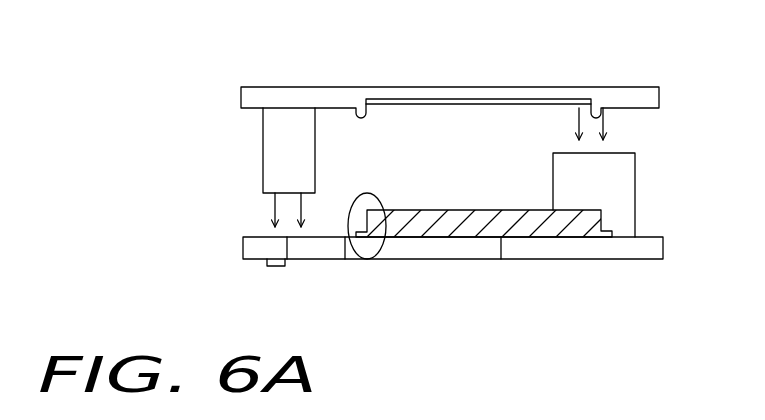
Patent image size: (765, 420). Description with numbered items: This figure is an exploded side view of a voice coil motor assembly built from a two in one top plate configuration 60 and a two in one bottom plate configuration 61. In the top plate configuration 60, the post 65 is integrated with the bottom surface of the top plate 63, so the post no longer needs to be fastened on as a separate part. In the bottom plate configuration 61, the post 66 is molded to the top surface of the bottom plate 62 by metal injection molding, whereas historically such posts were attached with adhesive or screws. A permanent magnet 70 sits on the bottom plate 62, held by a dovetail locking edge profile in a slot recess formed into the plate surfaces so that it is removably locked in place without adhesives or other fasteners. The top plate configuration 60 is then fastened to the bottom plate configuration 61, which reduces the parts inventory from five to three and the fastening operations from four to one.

The two in one top plate configuration 60 is at (212, 62).
The two in one bottom plate configuration 61 is at (369, 266).
The bottom plate 62 is at (630, 248).
The top plate 63 is at (476, 98).
The post 65 is at (275, 150).
The post 66 is at (625, 172).
The permanent magnet 70 is at (533, 223).